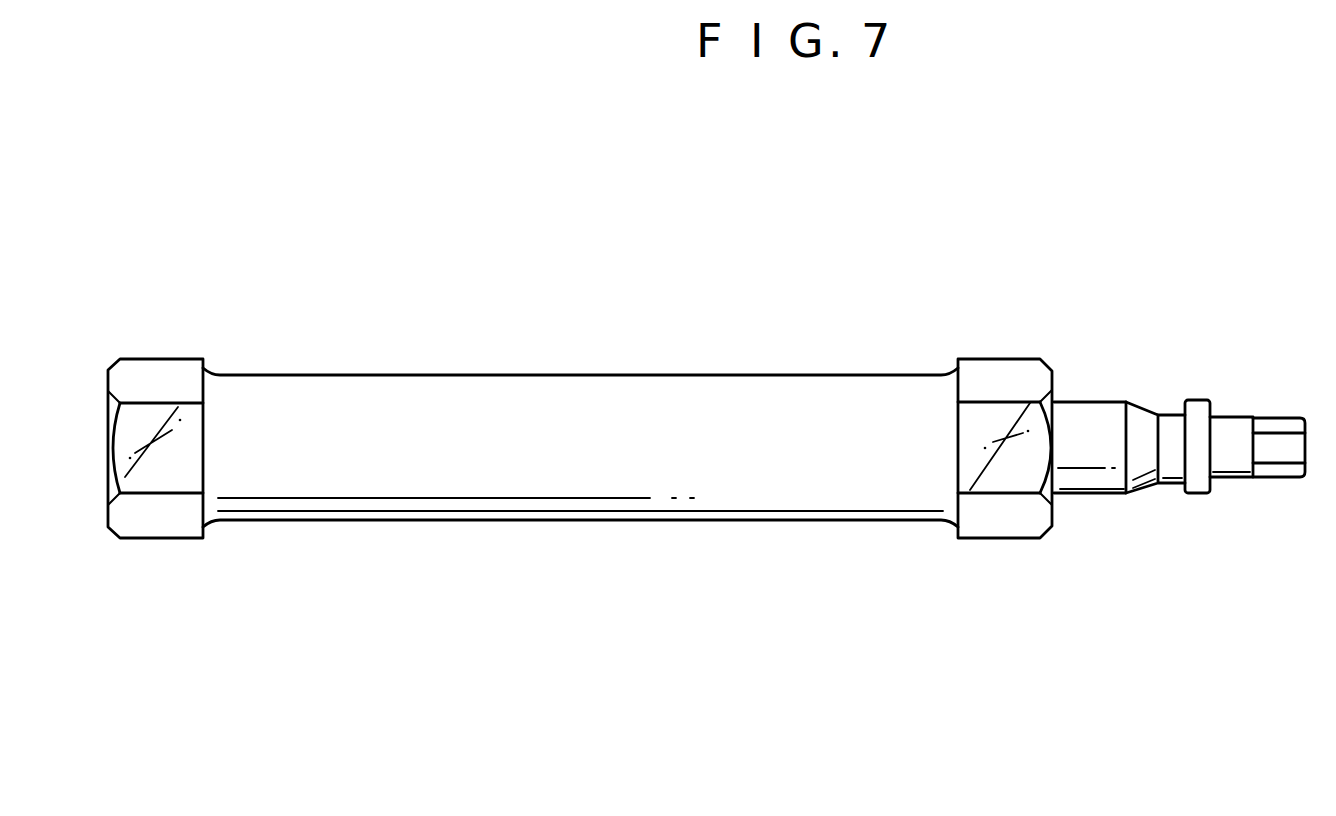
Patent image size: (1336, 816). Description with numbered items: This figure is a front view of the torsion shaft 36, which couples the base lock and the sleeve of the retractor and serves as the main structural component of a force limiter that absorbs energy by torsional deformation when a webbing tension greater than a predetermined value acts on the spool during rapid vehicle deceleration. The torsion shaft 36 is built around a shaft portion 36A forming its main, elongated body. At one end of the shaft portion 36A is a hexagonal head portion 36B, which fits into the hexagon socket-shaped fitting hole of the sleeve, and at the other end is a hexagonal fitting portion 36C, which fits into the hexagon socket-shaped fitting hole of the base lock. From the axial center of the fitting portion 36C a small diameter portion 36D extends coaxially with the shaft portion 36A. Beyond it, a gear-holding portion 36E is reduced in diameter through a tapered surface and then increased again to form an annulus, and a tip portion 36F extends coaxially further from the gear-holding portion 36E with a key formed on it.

The torsion shaft 36 is at (623, 333).
The shaft portion 36A is at (413, 397).
The hexagonal head portion 36B is at (170, 372).
The hexagonal fitting portion 36C is at (992, 378).
The small diameter portion 36D is at (1078, 427).
The gear-holding portion 36E is at (1135, 420).
The tip portion 36F is at (1282, 442).